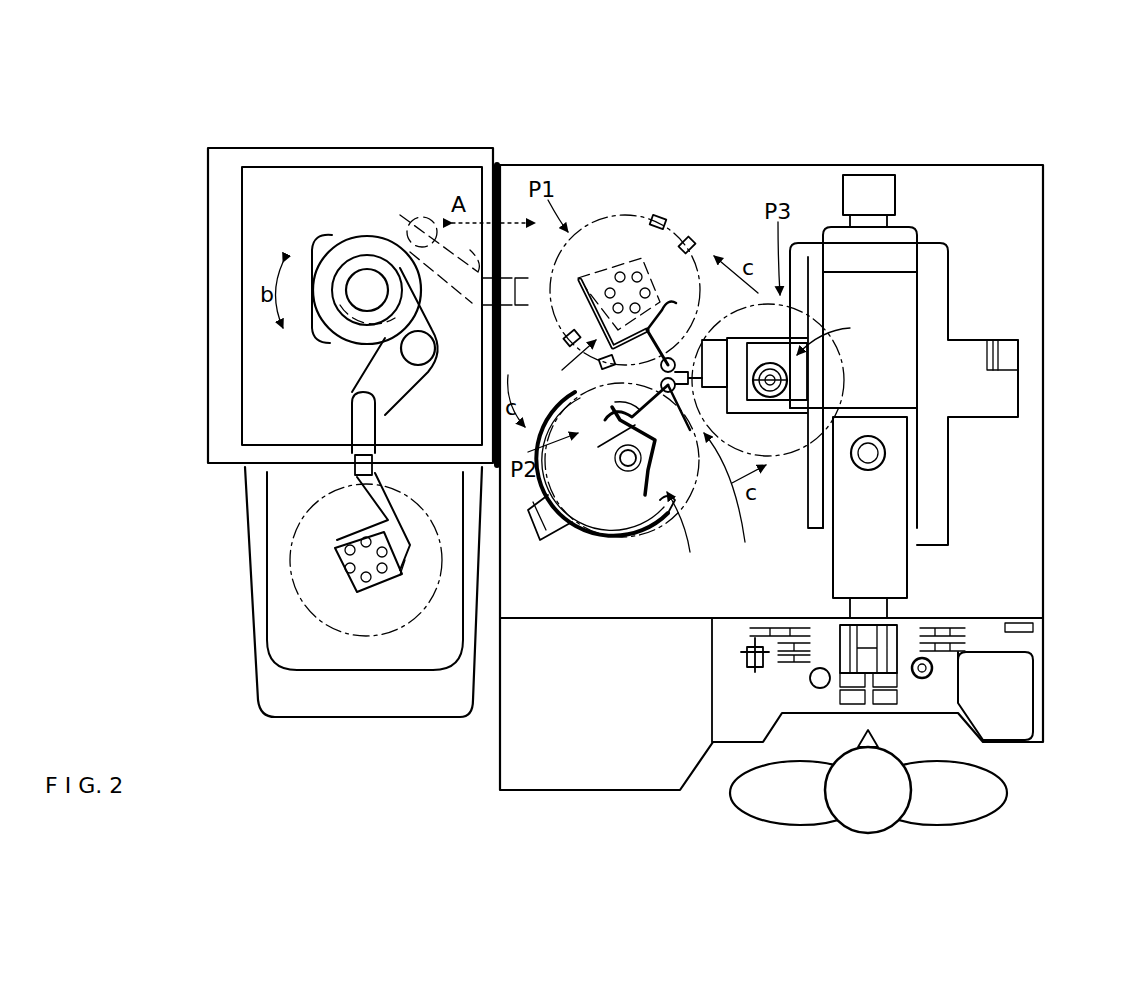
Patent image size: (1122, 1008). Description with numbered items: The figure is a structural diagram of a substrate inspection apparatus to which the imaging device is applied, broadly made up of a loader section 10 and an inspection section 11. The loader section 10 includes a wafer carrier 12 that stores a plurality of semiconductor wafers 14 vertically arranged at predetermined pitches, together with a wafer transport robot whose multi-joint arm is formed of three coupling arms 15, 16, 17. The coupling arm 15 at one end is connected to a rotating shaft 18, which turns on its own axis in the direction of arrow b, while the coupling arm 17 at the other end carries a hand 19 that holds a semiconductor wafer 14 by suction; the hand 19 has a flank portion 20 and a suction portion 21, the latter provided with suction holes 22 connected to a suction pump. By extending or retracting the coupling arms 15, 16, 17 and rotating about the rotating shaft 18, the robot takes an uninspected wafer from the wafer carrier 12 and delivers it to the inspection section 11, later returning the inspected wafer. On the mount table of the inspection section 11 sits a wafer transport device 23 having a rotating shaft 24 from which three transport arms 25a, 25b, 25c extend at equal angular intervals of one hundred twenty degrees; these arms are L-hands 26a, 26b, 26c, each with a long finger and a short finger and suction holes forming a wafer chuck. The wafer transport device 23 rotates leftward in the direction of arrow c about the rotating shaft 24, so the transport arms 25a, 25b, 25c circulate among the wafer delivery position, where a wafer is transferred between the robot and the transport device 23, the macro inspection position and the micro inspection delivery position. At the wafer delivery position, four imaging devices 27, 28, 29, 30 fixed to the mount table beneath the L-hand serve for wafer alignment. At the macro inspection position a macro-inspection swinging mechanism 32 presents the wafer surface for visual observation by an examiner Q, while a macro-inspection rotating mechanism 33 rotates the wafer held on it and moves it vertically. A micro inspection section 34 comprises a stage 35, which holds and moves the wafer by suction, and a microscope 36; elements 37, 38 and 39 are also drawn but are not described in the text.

The loader section 10 is at (493, 142).
The inspection section 11 is at (1040, 153).
The wafer carrier 12 is at (305, 690).
The semiconductor wafer 14 is at (367, 640).
The coupling arm 15 is at (383, 334).
The coupling arm 16 is at (400, 387).
The coupling arm 17 is at (367, 428).
The rotating shaft 18 is at (366, 282).
The hand 19 is at (340, 572).
The flank portion 20 is at (368, 510).
The suction portion 21 is at (371, 577).
The suction holes 22 is at (382, 553).
The wafer transport device 23 is at (738, 499).
The rotating shaft 24 is at (680, 305).
The transport arm 25a is at (564, 367).
The transport arm 25b is at (690, 534).
The transport arm 25c is at (842, 333).
The L-hand 26a is at (578, 300).
The L-hand 26b is at (645, 493).
The L-hand 26c is at (733, 412).
The imaging device 27 is at (660, 217).
The imaging device 28 is at (692, 241).
The imaging device 29 is at (567, 343).
The imaging device 30 is at (600, 366).
The macro-inspection swinging mechanism 32 is at (638, 543).
The macro-inspection rotating mechanism 33 is at (618, 460).
The micro inspection section 34 is at (1055, 200).
The stage 35 is at (788, 375).
The microscope 36 is at (897, 582).
The connector 37 is at (865, 703).
The bearing 38 is at (868, 470).
The control panel 39 is at (1055, 623).
The examiner Q is at (977, 793).